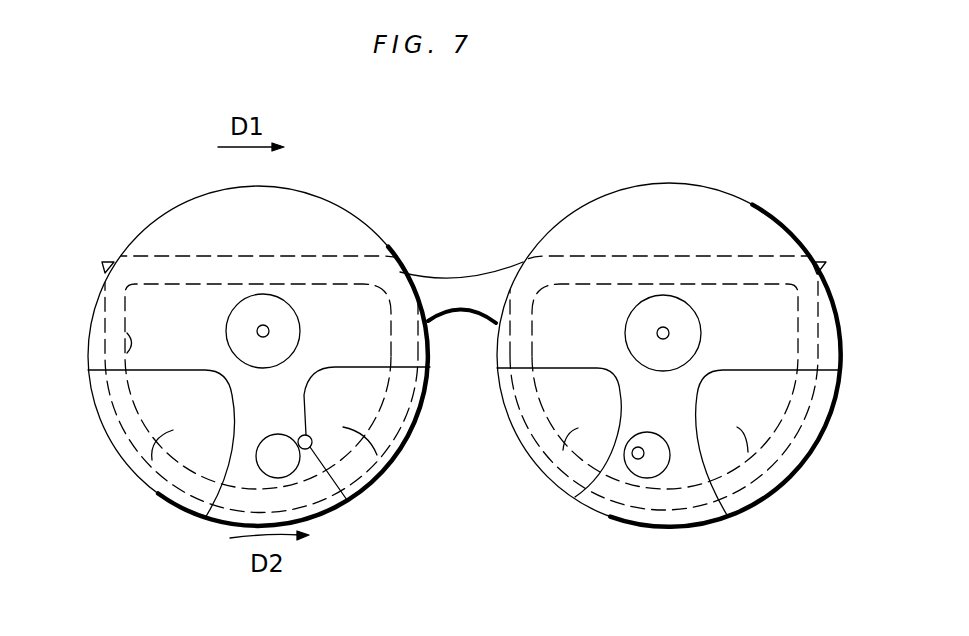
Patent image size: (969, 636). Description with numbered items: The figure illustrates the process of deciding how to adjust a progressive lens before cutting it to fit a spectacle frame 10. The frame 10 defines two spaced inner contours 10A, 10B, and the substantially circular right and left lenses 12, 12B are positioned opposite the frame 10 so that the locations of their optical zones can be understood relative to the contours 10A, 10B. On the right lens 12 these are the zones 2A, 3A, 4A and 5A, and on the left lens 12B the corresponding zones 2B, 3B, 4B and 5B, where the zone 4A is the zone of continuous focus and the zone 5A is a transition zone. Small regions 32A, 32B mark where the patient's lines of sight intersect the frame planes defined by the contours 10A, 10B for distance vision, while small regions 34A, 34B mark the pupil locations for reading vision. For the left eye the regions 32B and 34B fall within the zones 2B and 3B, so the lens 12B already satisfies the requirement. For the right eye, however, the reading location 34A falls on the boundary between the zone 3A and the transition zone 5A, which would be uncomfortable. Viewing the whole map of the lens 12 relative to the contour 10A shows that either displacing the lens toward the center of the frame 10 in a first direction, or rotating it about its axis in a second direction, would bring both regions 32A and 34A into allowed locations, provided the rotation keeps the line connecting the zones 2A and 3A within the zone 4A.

The zone 2A is at (285, 297).
The zone 2B is at (697, 310).
The zone 3A is at (262, 470).
The zone 3B is at (650, 478).
The zone of continuous focus 4A is at (253, 400).
The zone 4B is at (640, 395).
The transition zone 5A is at (152, 460).
The zone 5B is at (563, 450).
The frame 10 is at (208, 252).
The inner contour 10A is at (127, 327).
The inner contour 10B is at (803, 415).
The progressive lens 12 is at (123, 460).
The progressive lens 12B is at (799, 470).
The small region 32A is at (269, 331).
The small region 32B is at (657, 333).
The small region 34A is at (308, 449).
The small region 34B is at (636, 460).